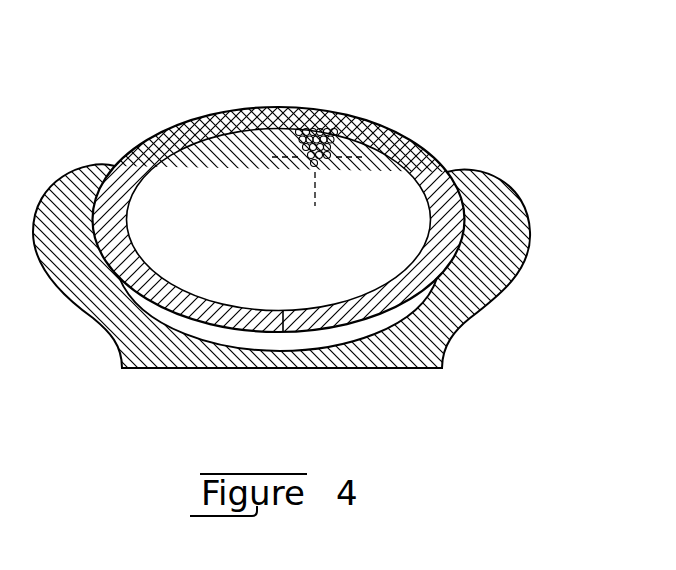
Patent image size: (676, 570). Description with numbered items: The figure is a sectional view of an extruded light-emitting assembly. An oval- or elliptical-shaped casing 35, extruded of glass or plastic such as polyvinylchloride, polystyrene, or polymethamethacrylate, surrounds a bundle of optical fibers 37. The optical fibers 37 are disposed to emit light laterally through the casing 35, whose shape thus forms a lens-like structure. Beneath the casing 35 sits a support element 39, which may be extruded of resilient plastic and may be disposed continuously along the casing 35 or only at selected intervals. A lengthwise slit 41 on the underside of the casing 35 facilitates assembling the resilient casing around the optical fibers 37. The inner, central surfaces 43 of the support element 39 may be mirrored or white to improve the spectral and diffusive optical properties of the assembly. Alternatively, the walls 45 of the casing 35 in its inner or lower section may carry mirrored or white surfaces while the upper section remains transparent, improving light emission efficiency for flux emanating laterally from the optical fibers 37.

The casing 35 is at (252, 106).
The optical fibers 37 is at (316, 131).
The support element 39 is at (526, 222).
The lengthwise slit 41 is at (283, 310).
The inner, central surfaces 43 is at (378, 331).
The walls of the casing in the inner or lower section 45 is at (353, 291).